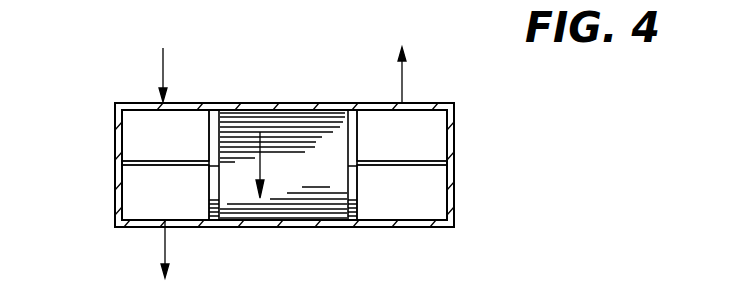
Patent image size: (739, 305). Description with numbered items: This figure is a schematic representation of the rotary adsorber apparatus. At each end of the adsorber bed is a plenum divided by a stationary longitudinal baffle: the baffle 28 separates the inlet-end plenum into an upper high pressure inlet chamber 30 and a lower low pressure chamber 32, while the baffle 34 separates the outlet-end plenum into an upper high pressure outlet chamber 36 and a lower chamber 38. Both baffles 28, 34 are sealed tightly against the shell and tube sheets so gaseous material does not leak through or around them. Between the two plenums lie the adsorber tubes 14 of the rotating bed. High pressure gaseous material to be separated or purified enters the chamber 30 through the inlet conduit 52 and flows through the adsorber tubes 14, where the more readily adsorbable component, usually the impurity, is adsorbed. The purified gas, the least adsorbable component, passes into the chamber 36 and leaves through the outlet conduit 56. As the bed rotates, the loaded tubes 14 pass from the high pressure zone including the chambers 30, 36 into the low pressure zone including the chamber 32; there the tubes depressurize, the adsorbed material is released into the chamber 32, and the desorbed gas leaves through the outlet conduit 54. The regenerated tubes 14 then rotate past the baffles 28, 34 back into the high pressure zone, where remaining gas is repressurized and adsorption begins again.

The adsorber tubes 14 is at (290, 206).
The longitudinal baffle 28 is at (136, 163).
The upper high pressure inlet chamber 30 is at (132, 140).
The lower low pressure chamber 32 is at (142, 200).
The longitudinal baffle 34 is at (425, 164).
The upper high pressure outlet chamber 36 is at (432, 142).
The lower chamber 38 is at (420, 203).
The inlet conduit 52 is at (163, 72).
The outlet conduit 54 is at (163, 240).
The outlet conduit 56 is at (402, 86).